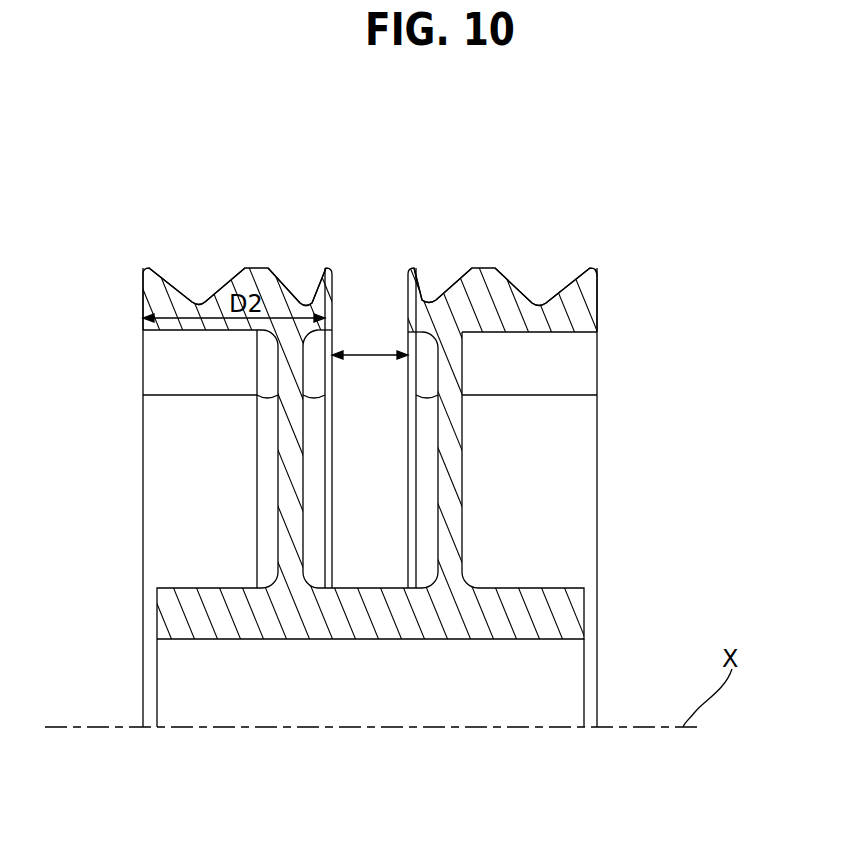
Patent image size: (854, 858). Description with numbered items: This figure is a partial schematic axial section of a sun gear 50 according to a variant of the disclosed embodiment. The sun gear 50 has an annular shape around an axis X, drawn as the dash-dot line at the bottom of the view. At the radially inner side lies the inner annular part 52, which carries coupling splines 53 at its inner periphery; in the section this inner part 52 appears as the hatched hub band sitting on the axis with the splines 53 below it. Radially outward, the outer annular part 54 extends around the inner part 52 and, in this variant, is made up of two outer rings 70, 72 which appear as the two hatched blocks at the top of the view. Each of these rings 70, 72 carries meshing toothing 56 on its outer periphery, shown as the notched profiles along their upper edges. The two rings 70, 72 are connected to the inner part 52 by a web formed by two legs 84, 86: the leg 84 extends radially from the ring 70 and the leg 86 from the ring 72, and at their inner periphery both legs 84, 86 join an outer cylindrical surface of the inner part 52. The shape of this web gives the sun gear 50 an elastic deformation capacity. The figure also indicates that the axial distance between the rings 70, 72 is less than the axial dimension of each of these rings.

The sun gear 50 is at (655, 335).
The inner annular part 52 is at (599, 609).
The coupling splines 53 is at (572, 683).
The outer annular part 54 is at (607, 292).
The meshing toothing 56 is at (320, 277).
The outer ring 70 is at (330, 324).
The outer ring 72 is at (598, 323).
The leg 84 is at (297, 457).
The leg 86 is at (460, 520).